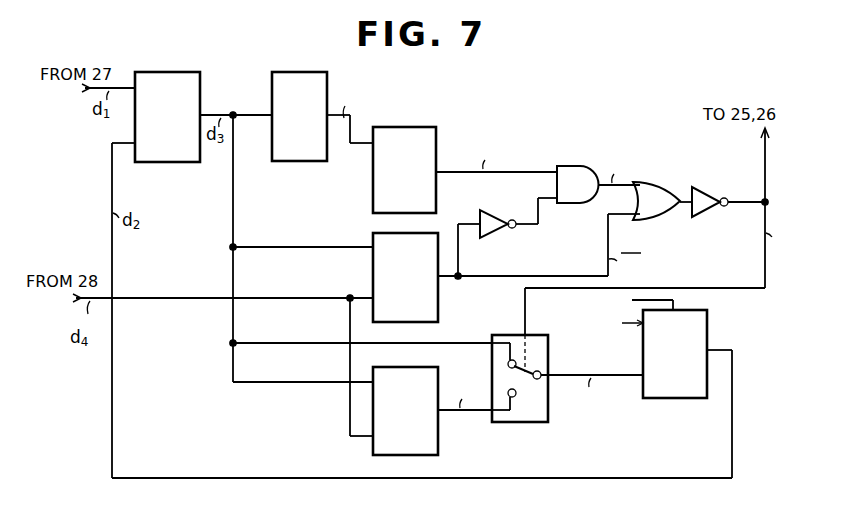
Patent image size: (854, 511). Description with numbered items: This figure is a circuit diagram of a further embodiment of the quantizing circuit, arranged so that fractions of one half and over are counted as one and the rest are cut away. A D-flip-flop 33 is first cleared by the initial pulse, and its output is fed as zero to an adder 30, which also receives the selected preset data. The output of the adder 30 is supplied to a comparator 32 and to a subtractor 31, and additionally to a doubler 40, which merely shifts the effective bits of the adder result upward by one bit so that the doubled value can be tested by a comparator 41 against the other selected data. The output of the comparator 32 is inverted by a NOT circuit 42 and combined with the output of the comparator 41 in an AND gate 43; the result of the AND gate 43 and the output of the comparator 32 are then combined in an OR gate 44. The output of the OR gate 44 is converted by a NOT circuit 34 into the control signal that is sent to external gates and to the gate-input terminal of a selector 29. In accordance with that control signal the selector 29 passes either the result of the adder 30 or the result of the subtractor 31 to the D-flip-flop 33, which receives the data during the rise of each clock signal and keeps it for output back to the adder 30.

The adder 30 is at (177, 72).
The doubler 40 is at (302, 72).
The comparator 41 is at (411, 127).
The NOT circuit 42 is at (496, 218).
The AND gate 43 is at (578, 166).
The OR gate 44 is at (655, 182).
The NOT circuit 34 is at (713, 190).
The comparator 32 is at (438, 300).
The subtractor 31 is at (438, 448).
The selector 29 is at (519, 422).
The D-flip-flop 33 is at (672, 398).